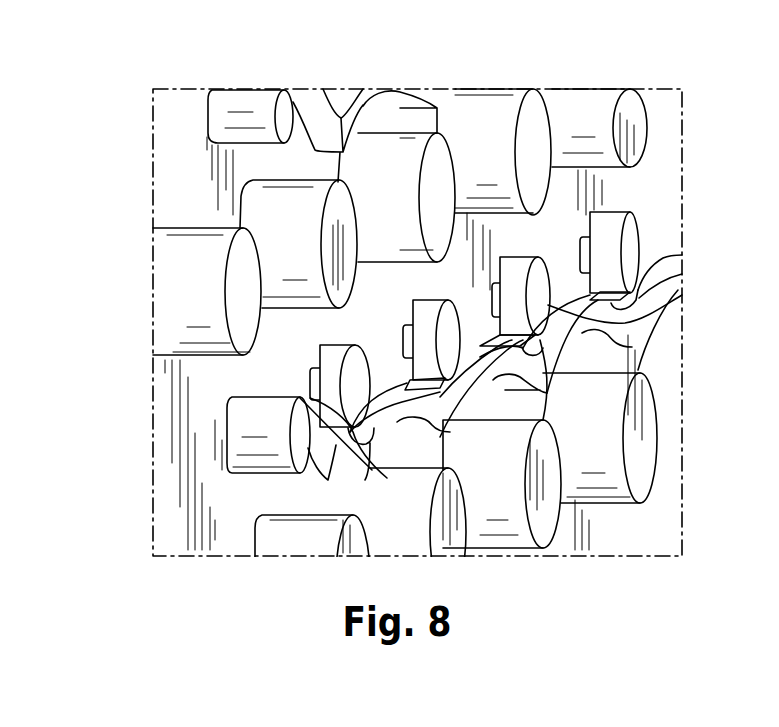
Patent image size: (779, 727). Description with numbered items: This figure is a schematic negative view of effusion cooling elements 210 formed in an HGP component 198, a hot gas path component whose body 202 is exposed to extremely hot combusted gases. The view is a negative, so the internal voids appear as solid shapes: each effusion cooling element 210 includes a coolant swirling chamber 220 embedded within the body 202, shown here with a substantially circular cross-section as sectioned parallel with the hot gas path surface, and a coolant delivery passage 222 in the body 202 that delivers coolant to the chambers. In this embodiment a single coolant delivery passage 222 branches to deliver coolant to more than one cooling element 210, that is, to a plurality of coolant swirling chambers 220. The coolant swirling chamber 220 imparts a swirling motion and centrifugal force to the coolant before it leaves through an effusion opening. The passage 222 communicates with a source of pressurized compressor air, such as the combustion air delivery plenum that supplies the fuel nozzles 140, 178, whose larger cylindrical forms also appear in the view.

The fuel nozzle 140 is at (395, 165).
The fuel nozzle 178 is at (637, 462).
The HGP component 198 is at (695, 121).
The body 202 is at (660, 237).
The effusion cooling element 210 is at (413, 311).
The coolant swirling chamber 220 is at (607, 257).
The coolant delivery passage 222 is at (543, 380).